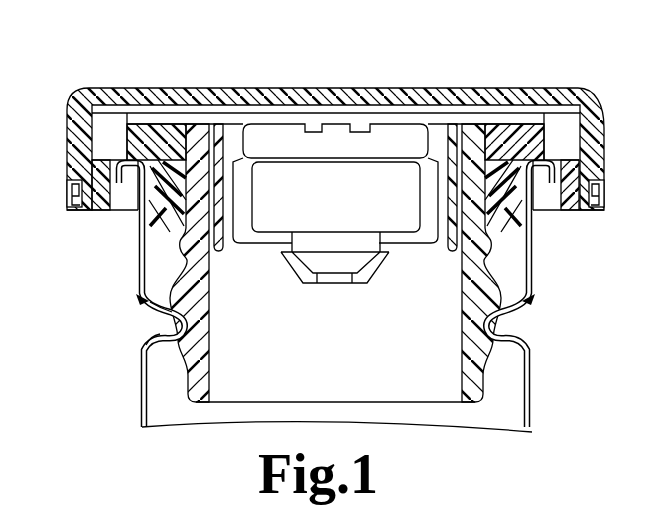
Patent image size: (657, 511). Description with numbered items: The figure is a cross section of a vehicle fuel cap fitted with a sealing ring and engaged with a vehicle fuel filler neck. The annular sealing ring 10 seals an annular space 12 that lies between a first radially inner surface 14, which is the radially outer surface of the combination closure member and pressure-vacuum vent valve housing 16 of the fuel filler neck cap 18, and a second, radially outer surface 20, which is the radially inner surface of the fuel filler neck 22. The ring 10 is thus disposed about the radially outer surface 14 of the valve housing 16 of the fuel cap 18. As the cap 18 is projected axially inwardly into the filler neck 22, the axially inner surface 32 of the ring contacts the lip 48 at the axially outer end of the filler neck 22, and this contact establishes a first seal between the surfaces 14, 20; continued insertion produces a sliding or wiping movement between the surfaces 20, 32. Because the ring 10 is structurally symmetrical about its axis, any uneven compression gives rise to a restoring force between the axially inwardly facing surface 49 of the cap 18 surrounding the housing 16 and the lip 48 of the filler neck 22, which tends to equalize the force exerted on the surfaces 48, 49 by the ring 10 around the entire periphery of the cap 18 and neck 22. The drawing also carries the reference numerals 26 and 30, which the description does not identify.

The annular sealing ring 10 is at (135, 257).
The annular space 12 is at (140, 312).
The first radially inner surface 14 is at (183, 231).
The combination closure member and pressure-vacuum vent valve housing 16 is at (345, 338).
The fuel filler neck cap 18 is at (319, 88).
The second radially outer surface 20 is at (152, 402).
The fuel filler neck 22 is at (138, 362).
The resilient liner 26 is at (140, 225).
The plug 30 is at (190, 202).
The axially inner surface 32 is at (137, 283).
The lip 48 is at (145, 300).
The axially inwardly facing surface 49 is at (115, 215).